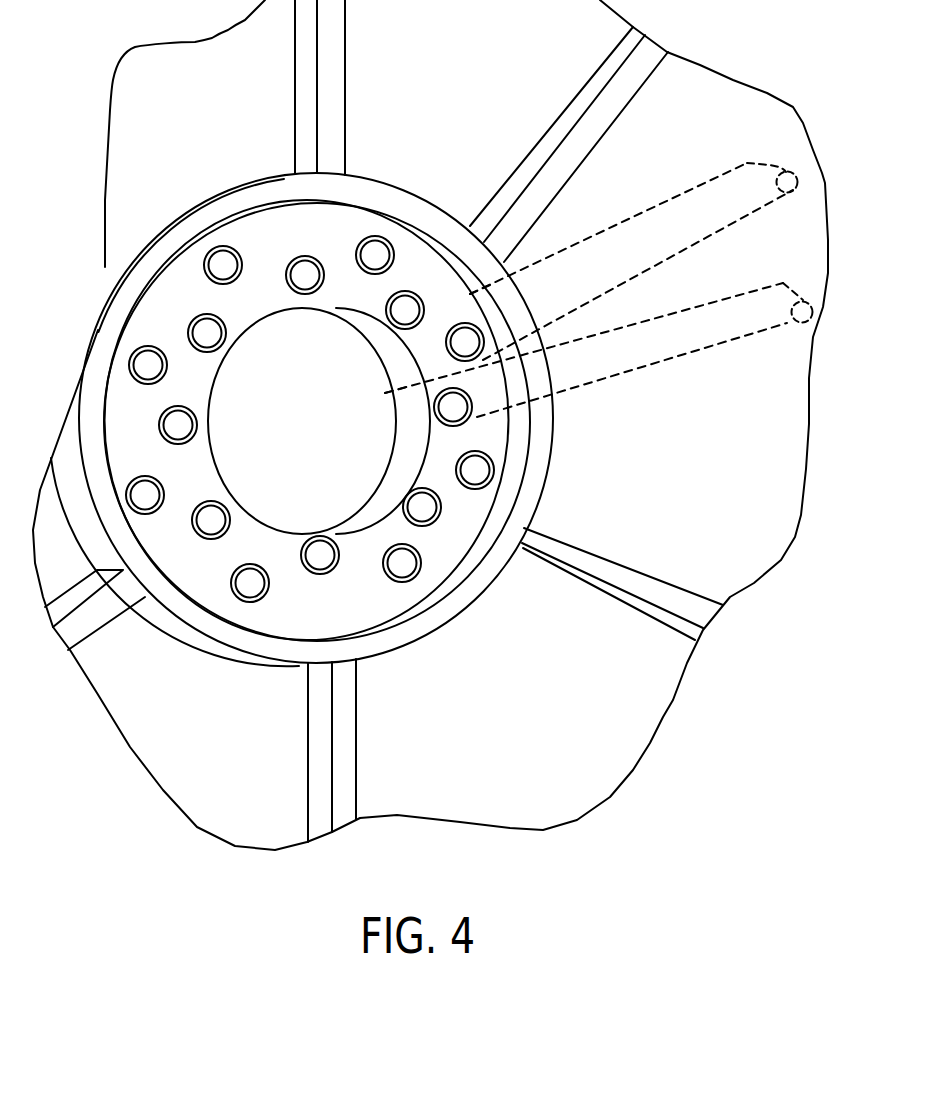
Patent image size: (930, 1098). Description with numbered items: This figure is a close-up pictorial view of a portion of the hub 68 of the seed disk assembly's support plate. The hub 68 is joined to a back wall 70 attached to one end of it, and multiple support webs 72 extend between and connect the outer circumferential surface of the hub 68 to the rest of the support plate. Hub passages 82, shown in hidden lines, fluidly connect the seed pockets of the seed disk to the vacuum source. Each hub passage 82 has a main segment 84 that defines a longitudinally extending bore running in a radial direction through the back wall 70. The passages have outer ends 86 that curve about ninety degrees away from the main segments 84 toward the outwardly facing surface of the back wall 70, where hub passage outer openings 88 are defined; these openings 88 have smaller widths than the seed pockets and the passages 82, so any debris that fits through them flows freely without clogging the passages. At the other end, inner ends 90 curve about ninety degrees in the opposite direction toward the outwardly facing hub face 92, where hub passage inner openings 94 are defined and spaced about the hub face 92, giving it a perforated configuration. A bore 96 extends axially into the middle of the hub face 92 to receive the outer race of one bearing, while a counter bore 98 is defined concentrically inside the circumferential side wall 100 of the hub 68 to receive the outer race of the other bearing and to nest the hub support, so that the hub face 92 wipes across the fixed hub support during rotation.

The hub 68 is at (207, 664).
The back wall 70 is at (633, 725).
The support webs 72 is at (337, 83).
The hub passages 82 is at (657, 196).
The main segment 84 is at (645, 243).
The outer ends 86 is at (752, 172).
The hub passage outer openings 88 is at (786, 172).
The inner ends 90 is at (462, 306).
The hub face 92 is at (437, 548).
The hub passage inner openings 94 is at (458, 347).
The bore 96 is at (260, 352).
The counter bore 98 is at (347, 227).
The circumferential side wall 100 is at (513, 462).